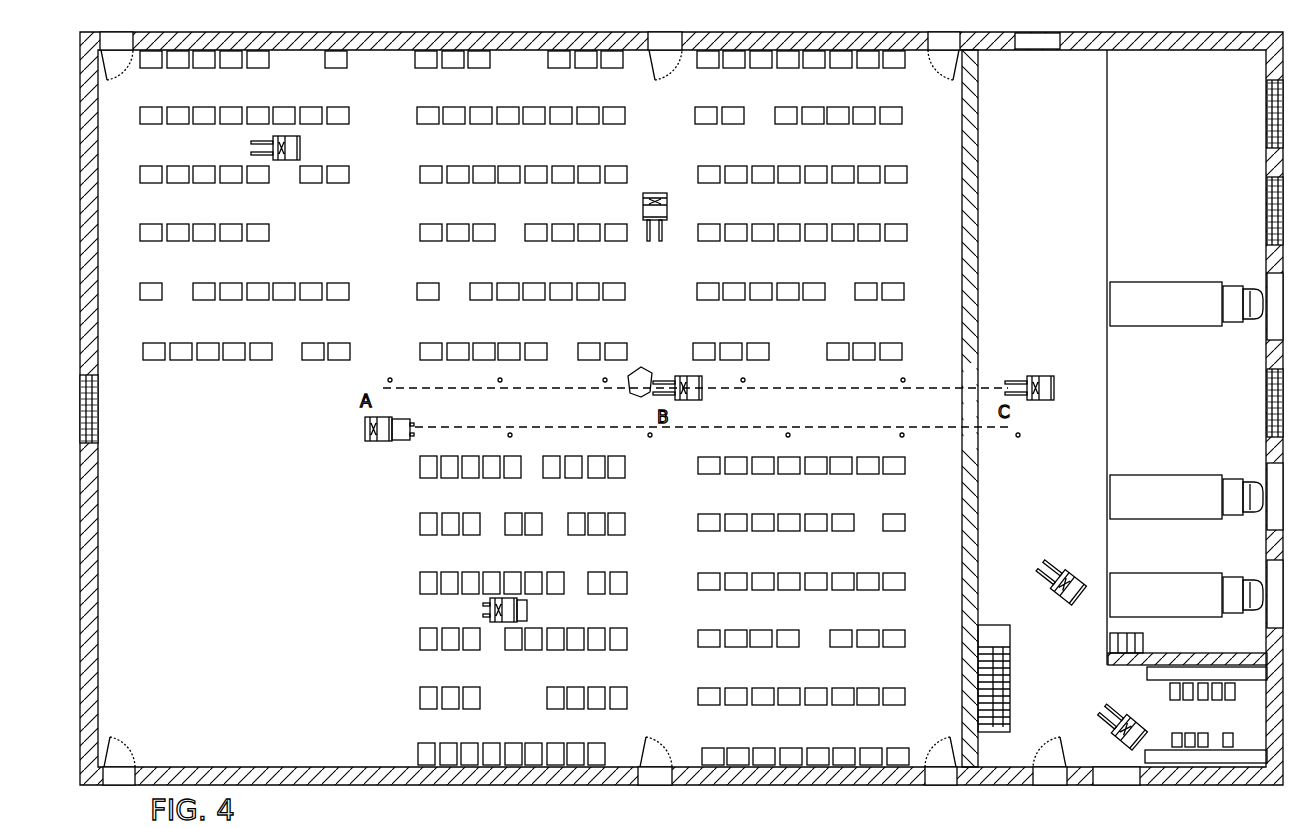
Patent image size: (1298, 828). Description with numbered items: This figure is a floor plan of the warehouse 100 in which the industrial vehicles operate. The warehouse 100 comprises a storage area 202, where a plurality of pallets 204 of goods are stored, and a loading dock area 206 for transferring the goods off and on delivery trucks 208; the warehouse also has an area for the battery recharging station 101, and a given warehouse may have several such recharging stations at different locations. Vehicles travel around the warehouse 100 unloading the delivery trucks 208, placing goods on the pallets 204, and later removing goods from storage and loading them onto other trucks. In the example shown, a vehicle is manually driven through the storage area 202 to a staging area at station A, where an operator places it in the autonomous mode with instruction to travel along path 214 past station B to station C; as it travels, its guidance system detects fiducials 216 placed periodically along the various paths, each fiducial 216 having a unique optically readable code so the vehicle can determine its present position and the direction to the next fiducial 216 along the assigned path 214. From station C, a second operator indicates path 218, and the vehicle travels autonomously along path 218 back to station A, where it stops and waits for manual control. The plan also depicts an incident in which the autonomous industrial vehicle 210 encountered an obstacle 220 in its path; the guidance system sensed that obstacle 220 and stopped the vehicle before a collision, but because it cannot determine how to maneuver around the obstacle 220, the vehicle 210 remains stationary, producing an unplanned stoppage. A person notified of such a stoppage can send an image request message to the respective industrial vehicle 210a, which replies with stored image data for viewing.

The warehouse 100 is at (544, 793).
The battery recharging station 101 is at (1205, 726).
The storage area 202 is at (524, 408).
The pallets 204 is at (415, 118).
The loading dock area 206 is at (1048, 500).
The delivery trucks 208 is at (1167, 313).
The autonomous industrial vehicle 210 is at (300, 146).
The industrial vehicle 210a is at (680, 377).
The path 214 is at (680, 430).
The fiducials 216 is at (390, 378).
The path 218 is at (788, 386).
The obstacle 220 is at (636, 369).